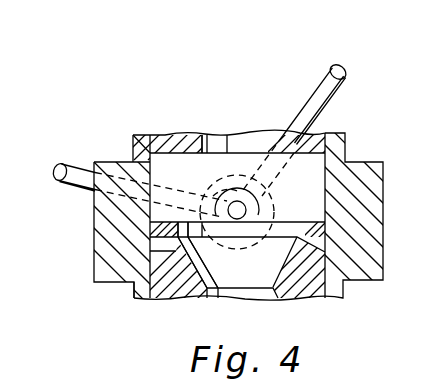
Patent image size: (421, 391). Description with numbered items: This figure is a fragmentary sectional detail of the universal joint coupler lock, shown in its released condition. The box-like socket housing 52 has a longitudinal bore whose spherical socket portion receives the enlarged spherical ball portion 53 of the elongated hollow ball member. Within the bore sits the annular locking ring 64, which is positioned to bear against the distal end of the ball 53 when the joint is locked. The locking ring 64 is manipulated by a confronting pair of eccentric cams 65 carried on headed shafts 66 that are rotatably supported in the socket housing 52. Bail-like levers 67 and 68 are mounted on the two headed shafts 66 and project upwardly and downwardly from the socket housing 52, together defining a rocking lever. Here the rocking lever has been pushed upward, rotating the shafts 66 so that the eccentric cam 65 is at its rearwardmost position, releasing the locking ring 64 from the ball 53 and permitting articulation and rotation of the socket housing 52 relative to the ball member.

The socket housing 52 is at (113, 162).
The spherical ball portion 53 is at (138, 284).
The annular locking ring 64 is at (180, 222).
The eccentric cam 65 is at (243, 207).
The headed shaft 66 is at (221, 200).
The lever 67 is at (73, 184).
The lever 68 is at (328, 78).